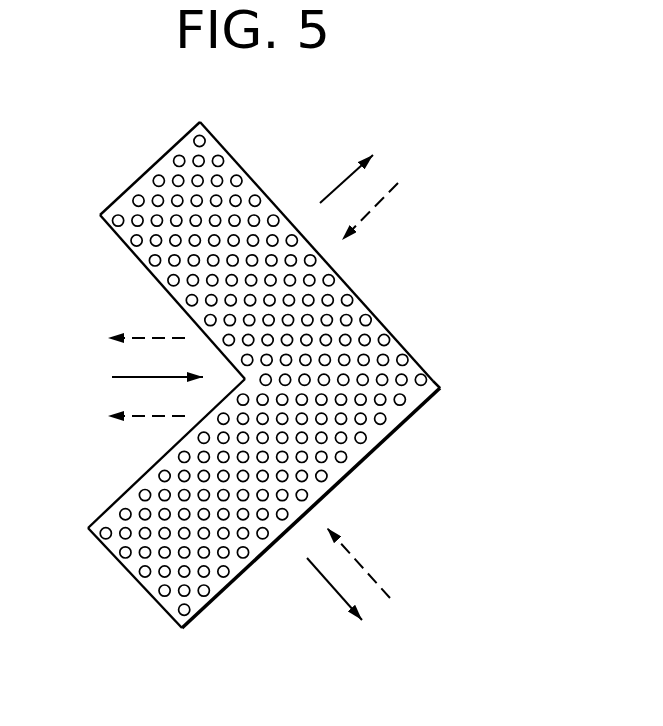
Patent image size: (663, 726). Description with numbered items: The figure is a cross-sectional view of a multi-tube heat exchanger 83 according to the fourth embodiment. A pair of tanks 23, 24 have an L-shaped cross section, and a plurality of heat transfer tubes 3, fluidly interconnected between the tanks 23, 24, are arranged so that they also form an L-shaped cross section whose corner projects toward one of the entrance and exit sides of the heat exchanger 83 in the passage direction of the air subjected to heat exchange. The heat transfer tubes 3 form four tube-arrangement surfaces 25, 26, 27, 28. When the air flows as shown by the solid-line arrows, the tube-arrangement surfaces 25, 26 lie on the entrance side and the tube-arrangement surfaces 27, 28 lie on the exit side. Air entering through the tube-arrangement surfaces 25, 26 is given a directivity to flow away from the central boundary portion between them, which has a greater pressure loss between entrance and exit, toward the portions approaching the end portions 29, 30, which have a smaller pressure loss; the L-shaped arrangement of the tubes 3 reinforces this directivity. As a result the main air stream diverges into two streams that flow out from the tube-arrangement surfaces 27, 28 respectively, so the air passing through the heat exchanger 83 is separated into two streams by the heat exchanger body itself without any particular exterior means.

The heat transfer tubes 3 is at (87, 529).
The tank 23 is at (433, 381).
The tank 24 is at (496, 358).
The tube-arrangement surface 25 is at (122, 248).
The tube-arrangement surface 26 is at (123, 487).
The tube-arrangement surface 27 is at (267, 177).
The tube-arrangement surface 28 is at (247, 573).
The end portion 29 is at (147, 158).
The end portion 30 is at (125, 578).
The multi-tube heat exchanger 83 is at (418, 282).